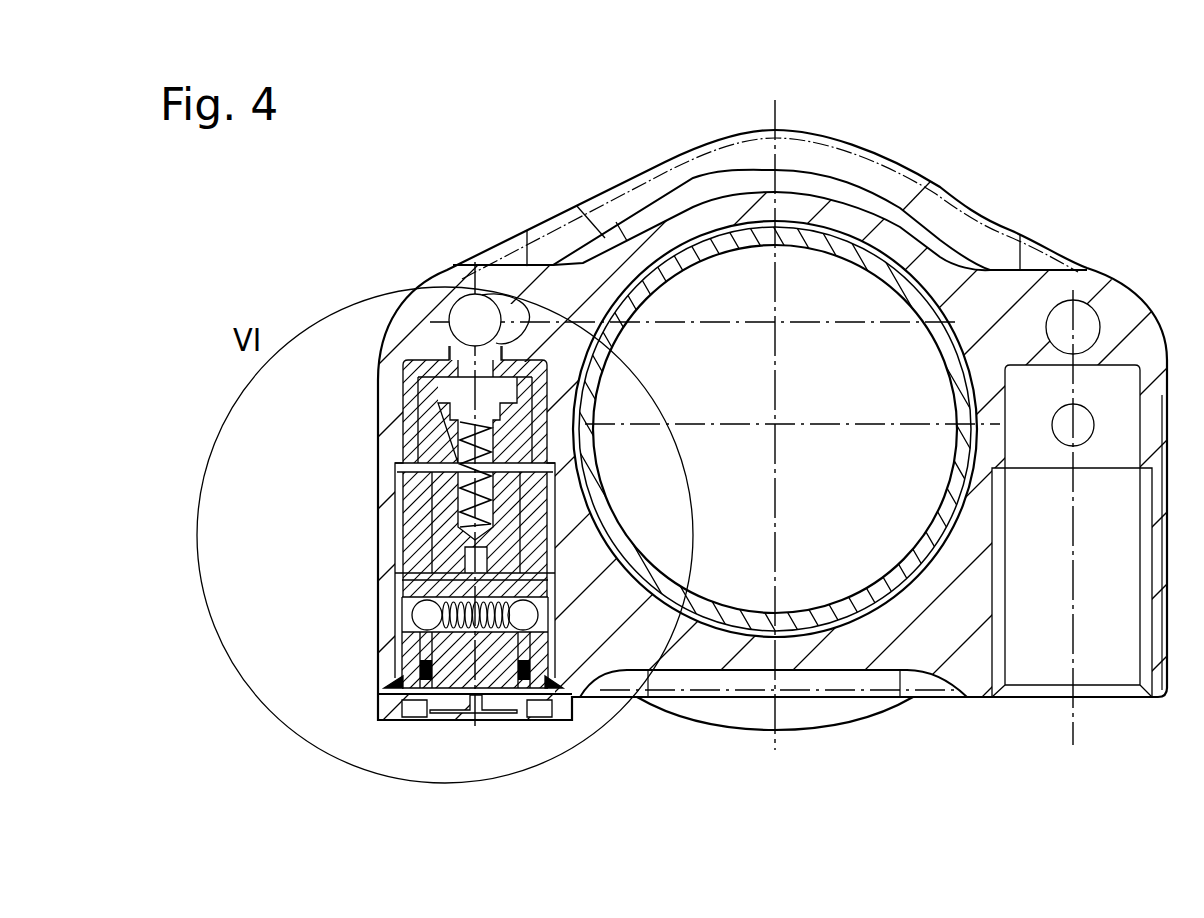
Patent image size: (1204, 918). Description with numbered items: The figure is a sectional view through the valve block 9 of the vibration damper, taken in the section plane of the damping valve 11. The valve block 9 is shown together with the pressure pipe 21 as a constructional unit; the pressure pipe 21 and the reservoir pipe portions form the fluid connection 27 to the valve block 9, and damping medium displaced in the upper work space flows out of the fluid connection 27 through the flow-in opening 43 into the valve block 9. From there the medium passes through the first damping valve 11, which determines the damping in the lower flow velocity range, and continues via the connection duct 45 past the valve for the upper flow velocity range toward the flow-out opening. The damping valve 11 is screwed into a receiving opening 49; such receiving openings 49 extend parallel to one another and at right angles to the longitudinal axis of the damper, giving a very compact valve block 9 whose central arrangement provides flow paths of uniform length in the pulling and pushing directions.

The valve block 9 is at (921, 256).
The damping valve 11 is at (475, 732).
The pressure pipe 21 is at (755, 612).
The fluid connection 27 is at (639, 582).
The flow-in opening 43 is at (509, 318).
The connection duct 45 is at (540, 372).
The receiving opening 49 is at (1043, 664).